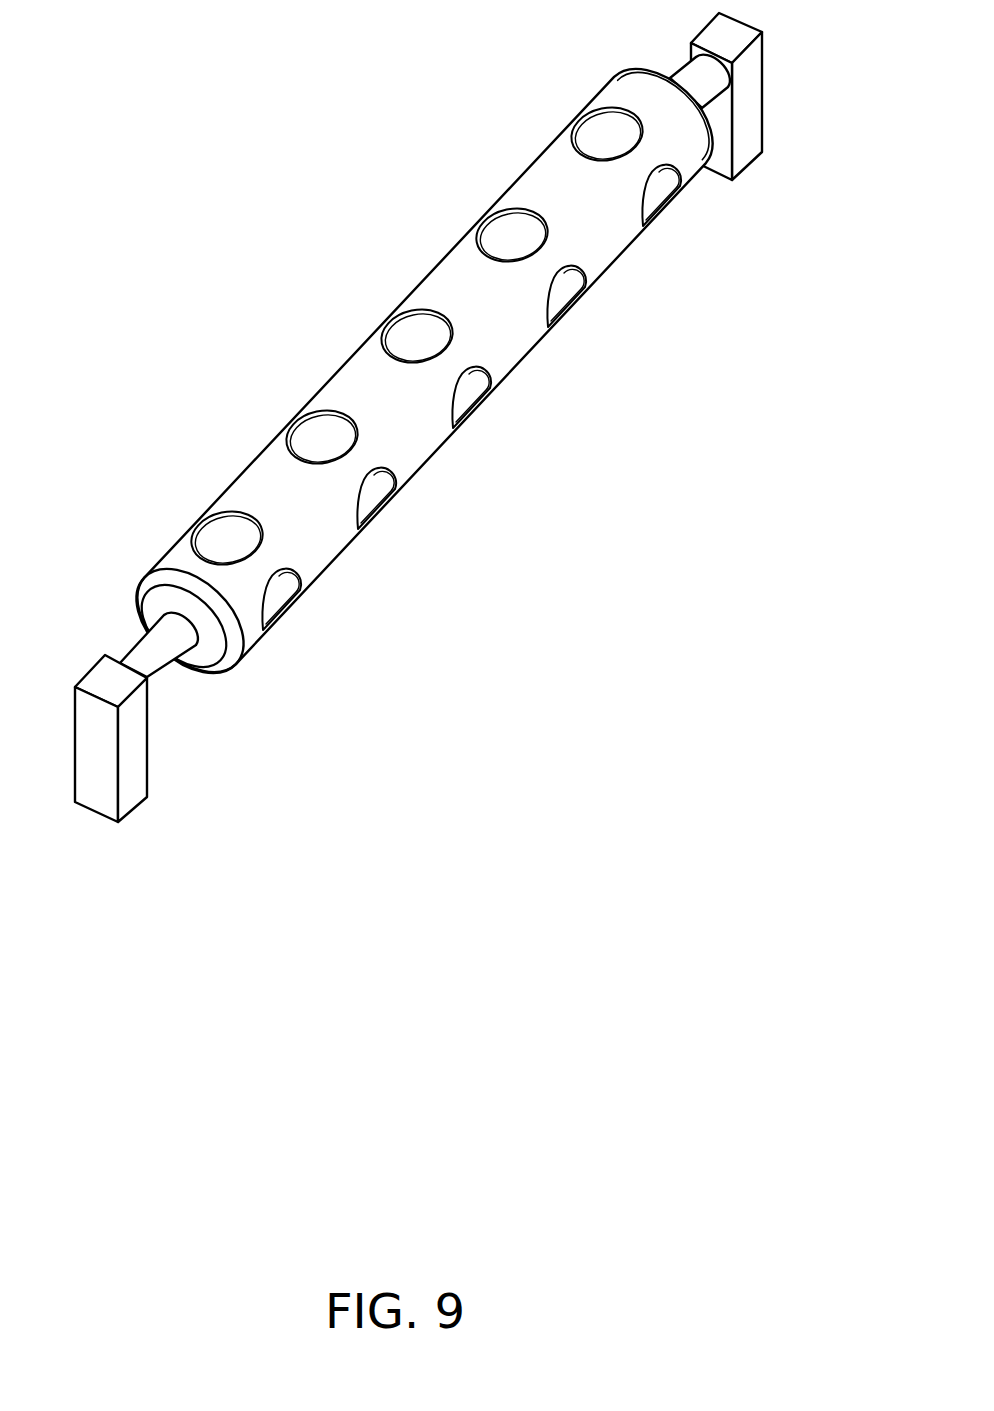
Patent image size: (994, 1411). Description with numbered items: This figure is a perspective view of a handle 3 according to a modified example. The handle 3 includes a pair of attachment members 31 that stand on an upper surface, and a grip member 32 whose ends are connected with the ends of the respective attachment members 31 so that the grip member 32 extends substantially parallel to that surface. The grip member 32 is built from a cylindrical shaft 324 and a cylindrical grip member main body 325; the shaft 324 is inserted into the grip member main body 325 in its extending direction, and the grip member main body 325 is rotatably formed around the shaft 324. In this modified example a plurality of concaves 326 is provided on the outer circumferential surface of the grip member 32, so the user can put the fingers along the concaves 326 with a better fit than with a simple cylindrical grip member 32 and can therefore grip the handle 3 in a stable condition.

The handle 3 is at (360, 98).
The attachment member 31 is at (751, 133).
The grip member 32 is at (276, 211).
The shaft 324 is at (157, 667).
The grip member main body 325 is at (413, 451).
The concave 326 is at (321, 434).